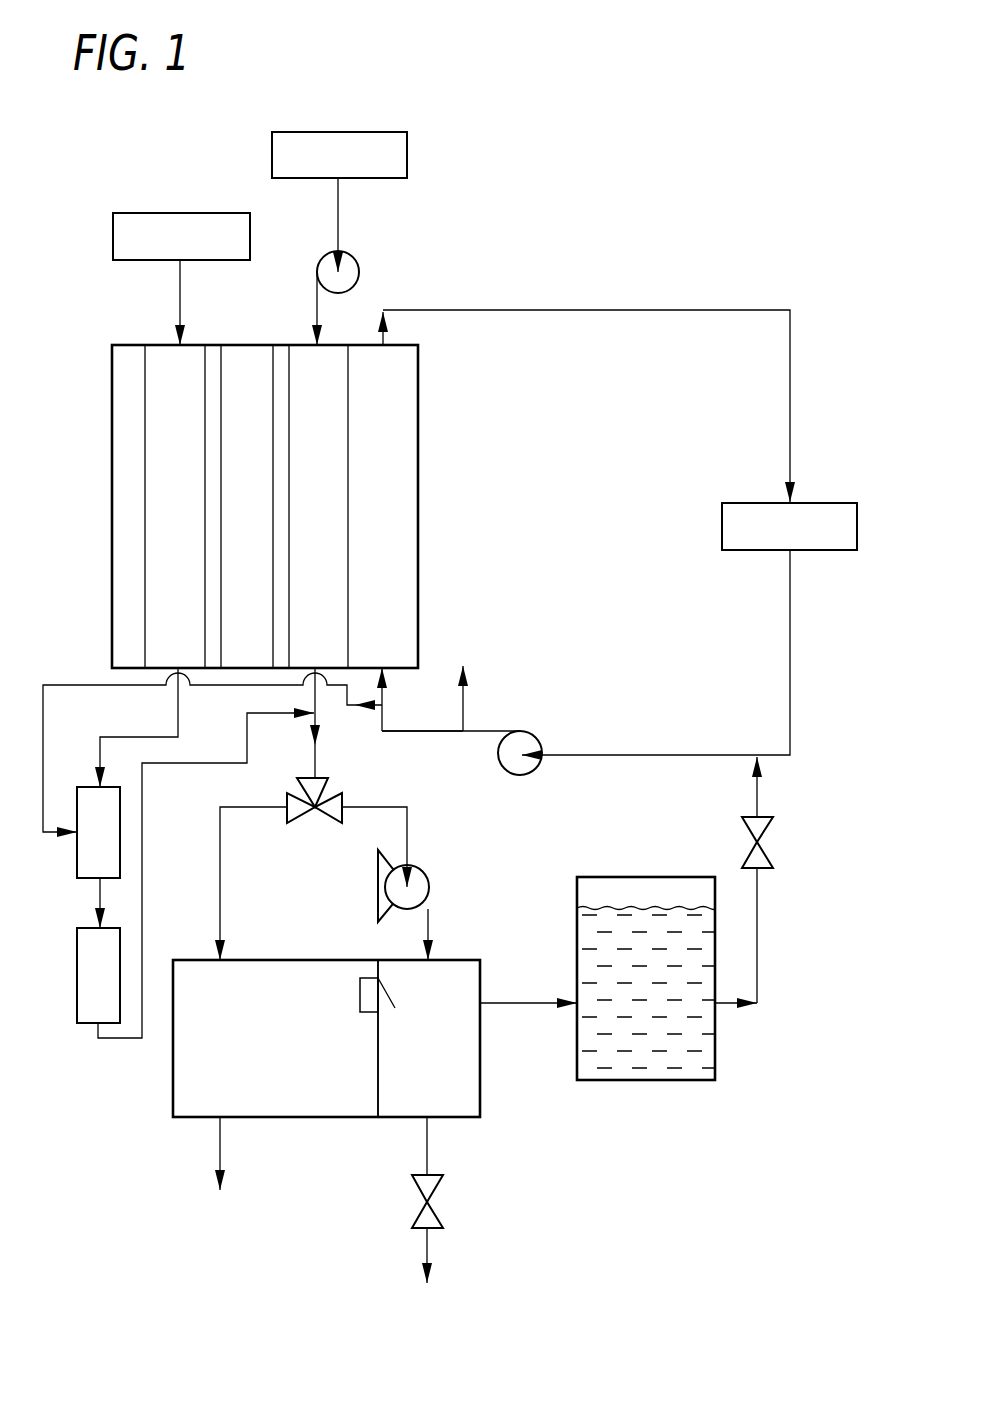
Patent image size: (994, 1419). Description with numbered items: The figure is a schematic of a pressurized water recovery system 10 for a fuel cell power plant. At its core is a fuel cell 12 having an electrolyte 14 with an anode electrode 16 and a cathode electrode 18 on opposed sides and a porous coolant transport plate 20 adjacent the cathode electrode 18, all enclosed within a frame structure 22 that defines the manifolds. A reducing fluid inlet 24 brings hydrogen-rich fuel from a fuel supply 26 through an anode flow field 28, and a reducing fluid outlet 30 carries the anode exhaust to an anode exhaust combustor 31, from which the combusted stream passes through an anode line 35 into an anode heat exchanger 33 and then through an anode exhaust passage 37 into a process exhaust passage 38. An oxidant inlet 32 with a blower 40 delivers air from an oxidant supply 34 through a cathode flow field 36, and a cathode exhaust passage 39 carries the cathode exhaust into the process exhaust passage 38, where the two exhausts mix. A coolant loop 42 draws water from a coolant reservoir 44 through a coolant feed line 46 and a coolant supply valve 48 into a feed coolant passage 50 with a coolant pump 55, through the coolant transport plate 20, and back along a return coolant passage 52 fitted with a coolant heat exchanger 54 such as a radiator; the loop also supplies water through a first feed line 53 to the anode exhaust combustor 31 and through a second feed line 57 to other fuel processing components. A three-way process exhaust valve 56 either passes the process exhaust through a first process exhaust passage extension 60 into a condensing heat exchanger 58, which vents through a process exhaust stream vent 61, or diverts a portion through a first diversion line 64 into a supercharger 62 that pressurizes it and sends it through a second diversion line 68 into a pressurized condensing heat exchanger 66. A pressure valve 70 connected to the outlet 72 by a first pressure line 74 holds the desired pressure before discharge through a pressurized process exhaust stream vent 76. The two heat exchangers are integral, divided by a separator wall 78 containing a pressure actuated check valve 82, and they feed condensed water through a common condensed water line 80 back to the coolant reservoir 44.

The pressurized water recovery system 10 is at (562, 122).
The fuel cell 12 is at (236, 185).
The electrolyte 14 is at (236, 357).
The anode electrode 16 is at (185, 360).
The cathode electrode 18 is at (328, 358).
The porous coolant transport plate 20 is at (395, 398).
The frame structure 22 is at (123, 563).
The reducing fluid inlet 24 is at (177, 293).
The fuel supply 26 is at (185, 215).
The anode flow field 28 is at (172, 407).
The reducing fluid outlet 30 is at (177, 698).
The anode exhaust combustor 31 is at (87, 793).
The oxidant inlet 32 is at (313, 297).
The anode heat exchanger 33 is at (90, 982).
The oxidant supply 34 is at (337, 135).
The anode line 35 is at (98, 885).
The cathode flow field 36 is at (327, 552).
The anode exhaust passage 37 is at (142, 842).
The process exhaust passage 38 is at (312, 768).
The cathode exhaust passage 39 is at (318, 698).
The blower 40 is at (362, 270).
The coolant loop 42 is at (702, 716).
The coolant reservoir 44 is at (688, 1065).
The coolant feed line 46 is at (757, 925).
The coolant supply valve 48 is at (742, 825).
The feed coolant passage 50 is at (595, 753).
The return coolant passage 52 is at (657, 312).
The first feed line 53 is at (82, 683).
The coolant heat exchanger 54 is at (818, 508).
The coolant pump 55 is at (540, 735).
The process exhaust valve 56 is at (305, 825).
The second feed line 57 is at (462, 703).
The condensing heat exchanger 58 is at (200, 1073).
The first process exhaust passage extension 60 is at (220, 860).
The process exhaust stream vent 61 is at (220, 1140).
The supercharger 62 is at (432, 880).
The first diversion line 64 is at (383, 808).
The pressurized condensing heat exchanger 66 is at (463, 1075).
The second diversion line 68 is at (430, 912).
The pressure valve 70 is at (443, 1185).
The outlet 72 is at (425, 1120).
The first pressure line 74 is at (430, 1140).
The pressurized process exhaust stream vent 76 is at (430, 1240).
The separator wall 78 is at (378, 1057).
The common condensed water line 80 is at (522, 1003).
The pressure actuated check valve 82 is at (360, 1000).